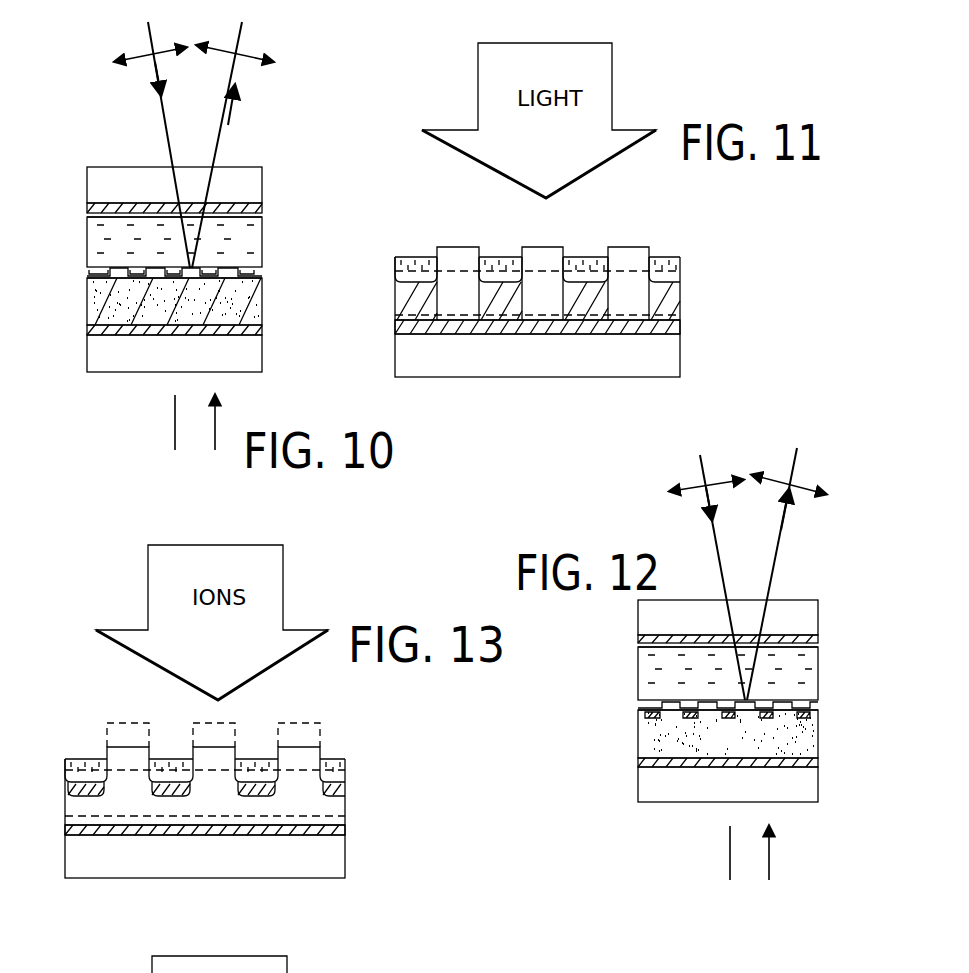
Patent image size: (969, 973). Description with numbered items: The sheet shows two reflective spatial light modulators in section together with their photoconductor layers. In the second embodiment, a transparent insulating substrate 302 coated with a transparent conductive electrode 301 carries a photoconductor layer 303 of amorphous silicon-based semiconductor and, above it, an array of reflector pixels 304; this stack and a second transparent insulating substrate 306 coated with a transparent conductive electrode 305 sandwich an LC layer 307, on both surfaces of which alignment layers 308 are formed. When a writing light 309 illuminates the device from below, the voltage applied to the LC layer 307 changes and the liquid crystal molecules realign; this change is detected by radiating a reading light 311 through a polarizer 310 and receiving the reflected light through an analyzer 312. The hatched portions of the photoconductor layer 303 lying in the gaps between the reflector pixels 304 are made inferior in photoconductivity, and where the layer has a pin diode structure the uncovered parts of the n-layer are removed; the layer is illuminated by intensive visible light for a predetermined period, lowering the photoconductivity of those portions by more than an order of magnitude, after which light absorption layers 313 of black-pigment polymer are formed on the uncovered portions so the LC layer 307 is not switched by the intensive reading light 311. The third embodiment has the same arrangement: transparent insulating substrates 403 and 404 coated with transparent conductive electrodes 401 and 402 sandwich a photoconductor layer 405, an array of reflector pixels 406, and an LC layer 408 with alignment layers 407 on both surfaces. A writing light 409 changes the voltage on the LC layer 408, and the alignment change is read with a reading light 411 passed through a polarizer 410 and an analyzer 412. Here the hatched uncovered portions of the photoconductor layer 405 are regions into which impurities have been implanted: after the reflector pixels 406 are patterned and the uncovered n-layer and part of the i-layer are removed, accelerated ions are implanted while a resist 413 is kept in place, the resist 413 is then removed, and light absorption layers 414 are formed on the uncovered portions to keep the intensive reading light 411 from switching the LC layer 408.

In FIG. 10, the transparent conductive electrode 301 is at (262, 330).
In FIG. 11, the transparent conductive electrode 301 is at (680, 335).
In FIG. 10, the transparent insulating substrate 302 is at (262, 360).
In FIG. 11, the transparent insulating substrate 302 is at (680, 360).
In FIG. 10, the photoconductor layer 303 is at (262, 305).
In FIG. 11, the photoconductor layer 303 is at (637, 271).
In FIG. 10, the reflector pixels 304 is at (262, 275).
In FIG. 11, the reflector pixels 304 is at (667, 222).
In FIG. 10, the transparent conductive electrode 305 is at (262, 208).
In FIG. 10, the transparent insulating substrate 306 is at (262, 187).
In FIG. 10, the LC layer 307 is at (262, 243).
In FIG. 10, the alignment layers 308 is at (87, 215).
In FIG. 10, the writing light 309 is at (235, 455).
In FIG. 10, the polarizer 310 is at (133, 62).
In FIG. 10, the reading light 311 is at (147, 32).
In FIG. 10, the analyzer 312 is at (250, 62).
In FIG. 11, the light absorption layers 313 is at (415, 257).
In FIG. 12, the transparent conductive electrode 401 is at (812, 762).
In FIG. 13, the transparent conductive electrode 401 is at (345, 835).
In FIG. 12, the transparent conductive electrode 402 is at (812, 642).
In FIG. 12, the transparent insulating substrate 403 is at (812, 790).
In FIG. 13, the transparent insulating substrate 403 is at (345, 862).
In FIG. 12, the transparent insulating substrate 404 is at (812, 614).
In FIG. 12, the photoconductor layer 405 is at (808, 738).
In FIG. 13, the photoconductor layer 405 is at (291, 784).
In FIG. 12, the reflector pixels 406 is at (818, 707).
In FIG. 13, the reflector pixels 406 is at (320, 752).
In FIG. 12, the alignment layers 407 is at (638, 645).
In FIG. 12, the LC layer 408 is at (808, 672).
In FIG. 12, the writing light 409 is at (790, 886).
In FIG. 12, the polarizer 410 is at (688, 495).
In FIG. 12, the reading light 411 is at (703, 471).
In FIG. 12, the analyzer 412 is at (800, 497).
In FIG. 13, the resist 413 is at (128, 728).
In FIG. 13, the light absorption layers 414 is at (85, 760).